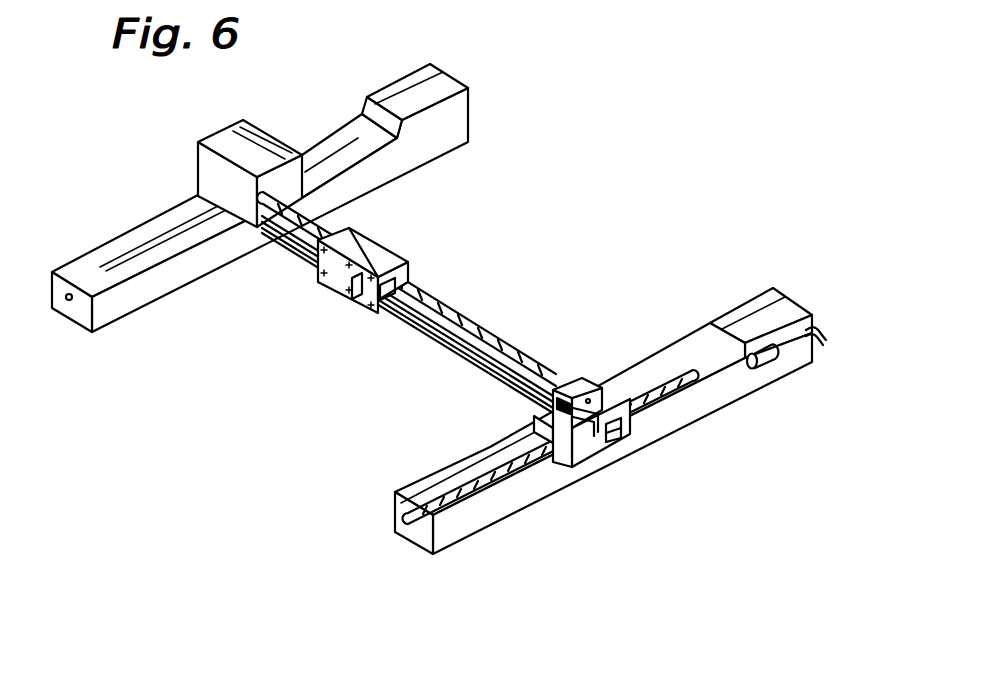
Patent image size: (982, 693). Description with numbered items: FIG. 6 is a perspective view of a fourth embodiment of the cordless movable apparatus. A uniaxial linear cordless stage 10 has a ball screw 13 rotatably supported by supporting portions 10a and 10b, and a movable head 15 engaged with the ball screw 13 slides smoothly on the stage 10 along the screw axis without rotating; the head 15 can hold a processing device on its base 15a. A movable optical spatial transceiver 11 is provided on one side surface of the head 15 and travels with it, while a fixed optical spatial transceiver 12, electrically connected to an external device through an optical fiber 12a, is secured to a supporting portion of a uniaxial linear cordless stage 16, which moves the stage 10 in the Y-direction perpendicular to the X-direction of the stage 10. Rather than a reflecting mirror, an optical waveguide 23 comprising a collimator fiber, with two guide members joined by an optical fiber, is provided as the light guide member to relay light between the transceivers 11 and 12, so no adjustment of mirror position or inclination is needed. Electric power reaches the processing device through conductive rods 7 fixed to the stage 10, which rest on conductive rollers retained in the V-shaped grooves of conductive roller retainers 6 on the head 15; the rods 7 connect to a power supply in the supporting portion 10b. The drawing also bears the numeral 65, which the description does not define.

The conductive roller retainer 6 is at (353, 228).
The conductive rod 7 is at (447, 340).
The uniaxial linear cordless stage 10 is at (272, 247).
The supporting portion 10a is at (212, 172).
The supporting portion 10b is at (585, 383).
The movable optical spatial transceiver 11 is at (398, 313).
The fixed optical spatial transceiver 12 is at (763, 367).
The optical fiber 12a is at (797, 343).
The ball screw 13 is at (490, 325).
The movable head 15 is at (388, 254).
The base 15a is at (327, 293).
The uniaxial linear cordless stage 16 is at (445, 73).
The optical waveguide 23 is at (607, 442).
The carriage 65 is at (583, 455).